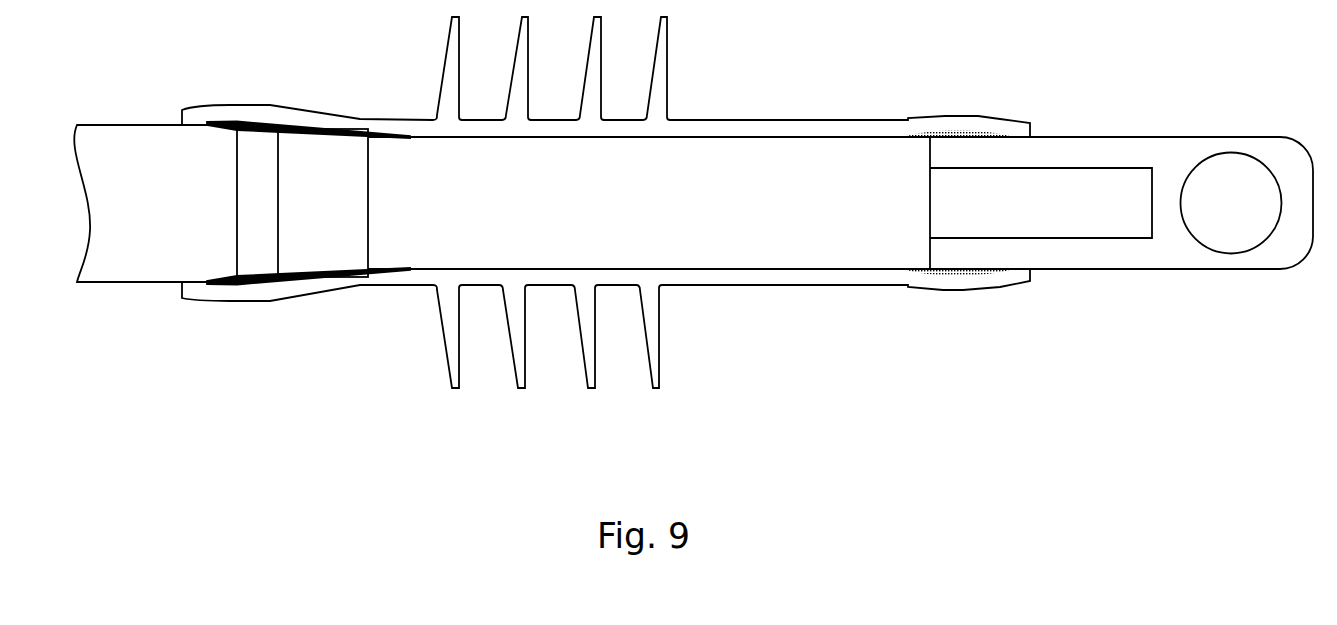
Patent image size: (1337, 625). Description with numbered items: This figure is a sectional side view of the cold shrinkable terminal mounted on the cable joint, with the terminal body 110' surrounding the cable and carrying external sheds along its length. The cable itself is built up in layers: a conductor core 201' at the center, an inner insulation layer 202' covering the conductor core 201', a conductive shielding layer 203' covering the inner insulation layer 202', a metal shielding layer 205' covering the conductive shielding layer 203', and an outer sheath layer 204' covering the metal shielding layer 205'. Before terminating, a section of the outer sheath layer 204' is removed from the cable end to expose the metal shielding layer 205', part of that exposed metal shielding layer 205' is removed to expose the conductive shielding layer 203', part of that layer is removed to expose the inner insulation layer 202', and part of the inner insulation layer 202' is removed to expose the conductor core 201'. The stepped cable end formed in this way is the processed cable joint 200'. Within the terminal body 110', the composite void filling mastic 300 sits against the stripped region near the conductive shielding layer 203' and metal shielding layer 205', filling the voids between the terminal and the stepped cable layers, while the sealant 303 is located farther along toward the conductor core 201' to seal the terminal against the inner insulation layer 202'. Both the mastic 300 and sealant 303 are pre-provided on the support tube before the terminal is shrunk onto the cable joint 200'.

The insulator housing with sheds 110' is at (606, 202).
The processed cable joint 200' is at (90, 336).
The conductor core 201' is at (1106, 241).
The inner insulation layer 202' is at (840, 259).
The conductive shielding layer 203' is at (311, 256).
The outer sheath layer 204' is at (155, 163).
The metal shielding layer 205' is at (270, 246).
The composite void filling mastic 300 is at (297, 122).
The sealant 303 is at (953, 133).